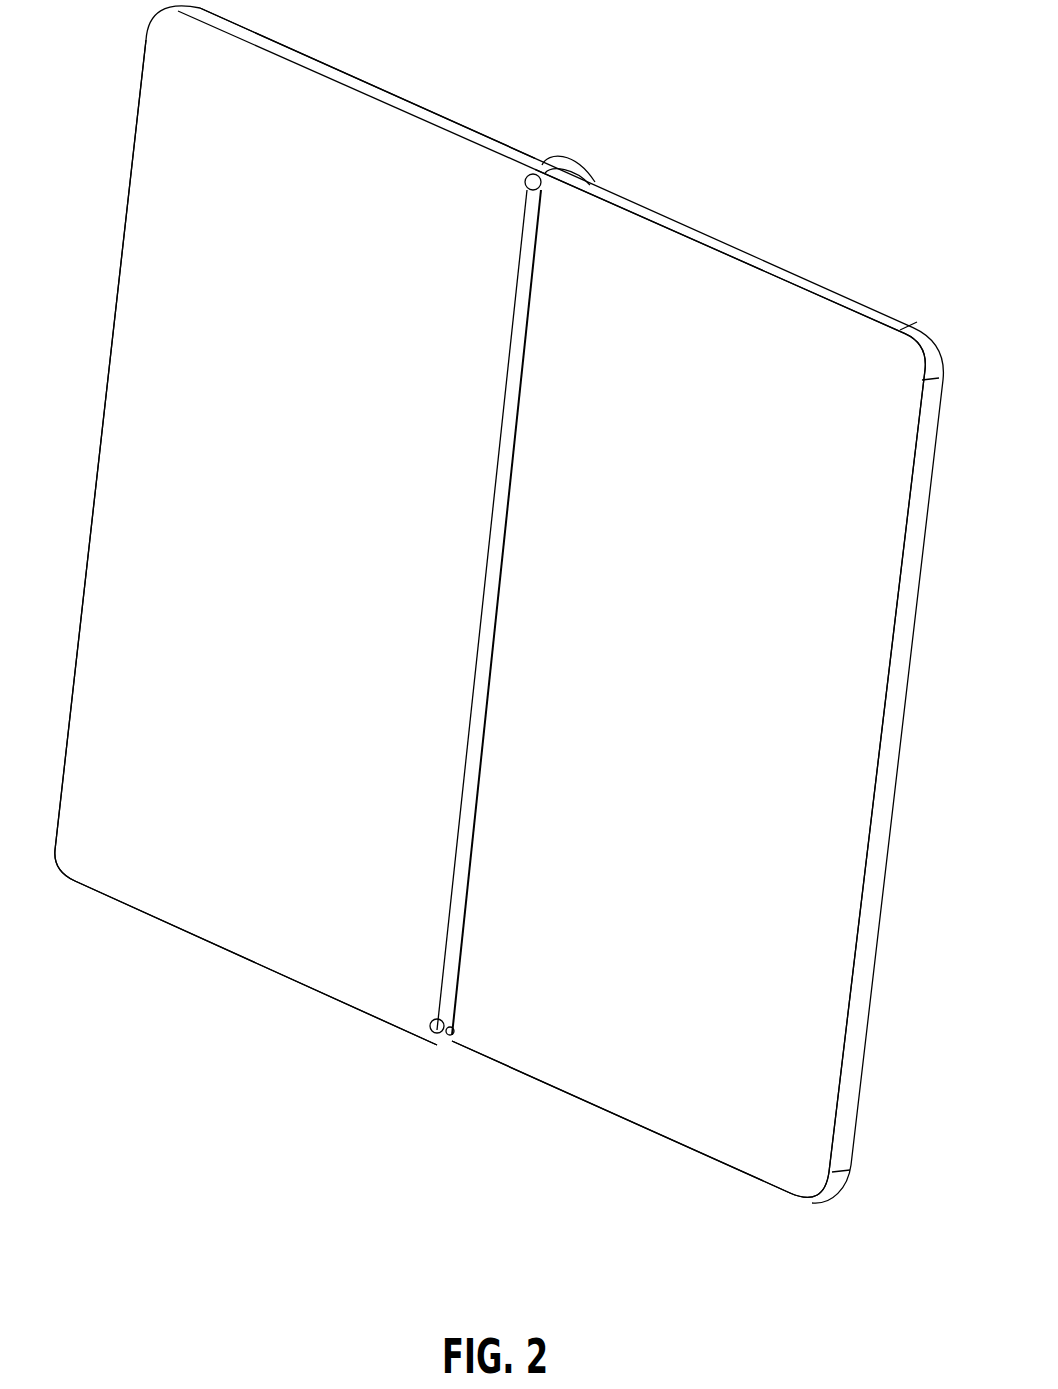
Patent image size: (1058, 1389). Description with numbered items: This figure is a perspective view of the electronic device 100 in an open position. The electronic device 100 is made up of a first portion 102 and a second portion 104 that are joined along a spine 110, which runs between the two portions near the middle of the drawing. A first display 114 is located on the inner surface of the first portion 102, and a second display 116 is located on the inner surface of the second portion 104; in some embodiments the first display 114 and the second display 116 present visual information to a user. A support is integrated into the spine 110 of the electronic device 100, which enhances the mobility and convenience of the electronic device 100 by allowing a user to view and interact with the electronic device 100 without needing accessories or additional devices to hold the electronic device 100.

The electronic device 100 is at (682, 45).
The first portion 102 is at (840, 252).
The second portion 104 is at (417, 68).
The spine 110 is at (592, 174).
The first display 114 is at (688, 683).
The second display 116 is at (295, 526).